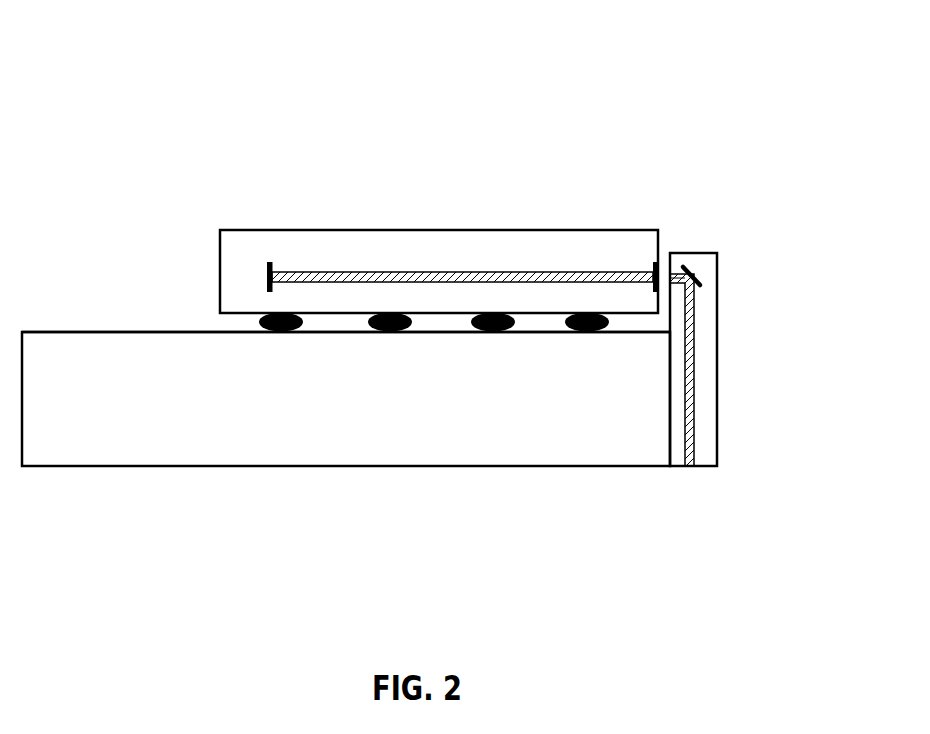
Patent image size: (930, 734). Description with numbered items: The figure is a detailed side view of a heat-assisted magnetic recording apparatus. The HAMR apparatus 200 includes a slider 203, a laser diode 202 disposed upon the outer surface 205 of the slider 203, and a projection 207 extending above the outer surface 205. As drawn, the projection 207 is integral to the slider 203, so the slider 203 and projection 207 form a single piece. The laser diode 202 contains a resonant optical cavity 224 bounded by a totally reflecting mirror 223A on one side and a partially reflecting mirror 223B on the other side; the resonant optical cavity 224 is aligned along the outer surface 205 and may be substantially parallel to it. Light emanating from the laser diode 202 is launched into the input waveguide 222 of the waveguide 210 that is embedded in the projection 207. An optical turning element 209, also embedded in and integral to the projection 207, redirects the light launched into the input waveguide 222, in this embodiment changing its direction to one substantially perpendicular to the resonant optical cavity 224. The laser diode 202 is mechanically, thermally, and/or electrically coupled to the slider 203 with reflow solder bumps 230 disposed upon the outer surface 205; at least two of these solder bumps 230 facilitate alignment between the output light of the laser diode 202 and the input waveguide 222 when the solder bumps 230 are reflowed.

The HAMR apparatus 200 is at (590, 48).
The laser diode 202 is at (409, 260).
The slider 203 is at (335, 409).
The outer surface 205 is at (157, 332).
The projection 207 is at (705, 250).
The optical turning element 209 is at (683, 270).
The waveguide 210 is at (688, 370).
The input waveguide 222 is at (673, 275).
The totally reflecting mirror 223A is at (268, 252).
The partially reflecting mirror 223B is at (655, 270).
The resonant optical cavity 224 is at (565, 273).
The reflow solder bumps 230 is at (587, 332).